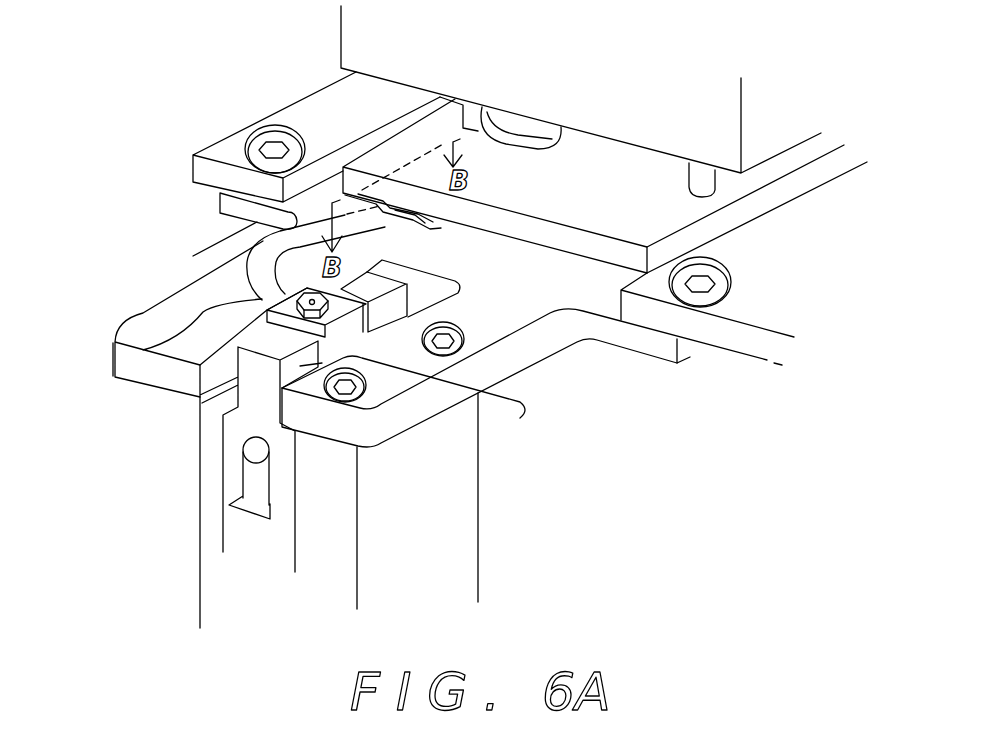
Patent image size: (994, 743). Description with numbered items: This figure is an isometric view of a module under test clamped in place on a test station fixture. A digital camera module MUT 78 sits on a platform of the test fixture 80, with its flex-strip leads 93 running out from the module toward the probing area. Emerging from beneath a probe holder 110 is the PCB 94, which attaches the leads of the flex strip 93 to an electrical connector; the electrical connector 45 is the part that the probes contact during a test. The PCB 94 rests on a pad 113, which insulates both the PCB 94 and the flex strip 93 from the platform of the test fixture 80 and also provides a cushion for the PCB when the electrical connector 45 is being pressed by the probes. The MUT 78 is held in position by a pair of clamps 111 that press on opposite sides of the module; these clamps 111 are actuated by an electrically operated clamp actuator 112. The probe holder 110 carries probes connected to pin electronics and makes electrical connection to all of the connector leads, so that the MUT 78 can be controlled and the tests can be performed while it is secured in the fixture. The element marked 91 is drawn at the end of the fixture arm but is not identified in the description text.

The electrical connector 45 is at (395, 215).
The digital camera module MUT 78 is at (200, 368).
The test fixture 80 is at (143, 315).
The arm end 91 is at (113, 378).
The flex-strip leads 93 is at (257, 270).
The PCB 94 is at (472, 227).
The probe holder 110 is at (619, 252).
The clamps 111 is at (387, 317).
The clamp actuator 112 is at (458, 505).
The pad 113 is at (408, 228).